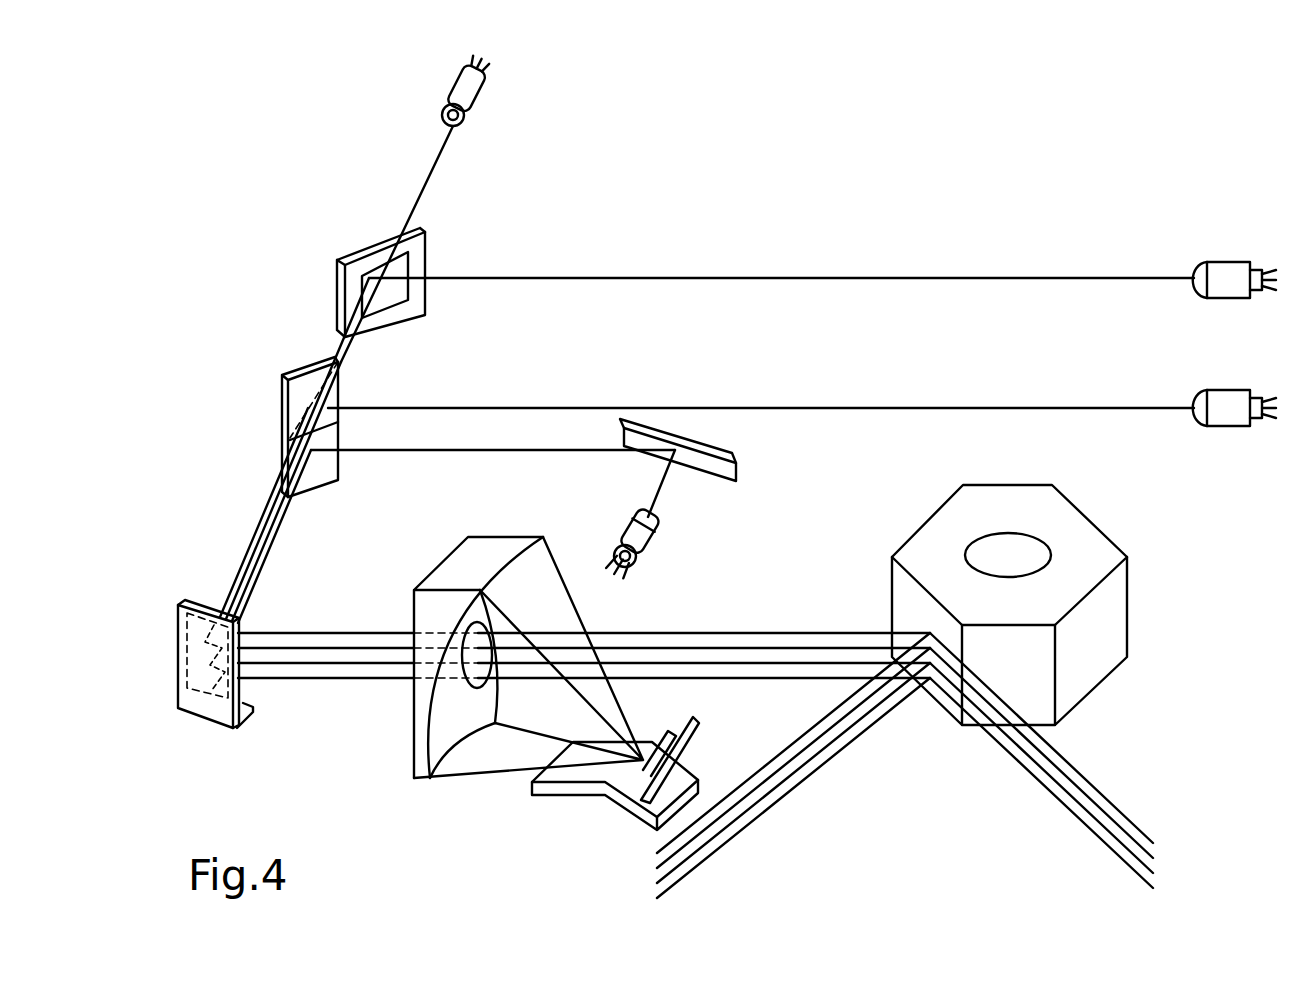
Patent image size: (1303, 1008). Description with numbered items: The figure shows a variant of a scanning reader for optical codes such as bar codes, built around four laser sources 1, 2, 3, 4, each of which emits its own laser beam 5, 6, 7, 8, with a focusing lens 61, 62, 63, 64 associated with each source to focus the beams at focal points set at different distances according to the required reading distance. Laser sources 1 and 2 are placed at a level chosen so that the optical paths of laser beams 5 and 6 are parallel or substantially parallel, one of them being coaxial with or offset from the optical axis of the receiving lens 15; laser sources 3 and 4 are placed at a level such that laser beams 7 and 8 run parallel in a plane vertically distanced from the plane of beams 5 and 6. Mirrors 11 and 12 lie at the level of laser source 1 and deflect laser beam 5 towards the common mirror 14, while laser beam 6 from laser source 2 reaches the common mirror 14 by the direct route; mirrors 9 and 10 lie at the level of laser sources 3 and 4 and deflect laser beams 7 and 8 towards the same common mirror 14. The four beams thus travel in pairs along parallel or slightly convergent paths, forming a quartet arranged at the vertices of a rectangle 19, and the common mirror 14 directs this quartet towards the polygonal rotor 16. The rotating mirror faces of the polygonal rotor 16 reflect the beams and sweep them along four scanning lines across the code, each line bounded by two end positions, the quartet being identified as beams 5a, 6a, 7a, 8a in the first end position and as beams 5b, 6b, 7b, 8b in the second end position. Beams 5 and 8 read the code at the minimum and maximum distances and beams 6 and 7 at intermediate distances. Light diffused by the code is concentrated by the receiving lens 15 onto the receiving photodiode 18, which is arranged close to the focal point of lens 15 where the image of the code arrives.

The laser source 1 is at (614, 562).
The laser source 2 is at (466, 75).
The laser source 3 is at (1257, 400).
The laser source 4 is at (1257, 268).
The laser beam 5 is at (231, 590).
The laser beam 6 is at (428, 172).
The laser beam 7 is at (240, 585).
The laser beam 8 is at (258, 575).
The mirror 9 is at (293, 392).
The mirror 10 is at (356, 278).
The mirror 11 is at (701, 478).
The mirror 12 is at (326, 446).
The common mirror 14 is at (205, 713).
The receiving lens 15 is at (424, 772).
The polygonal rotor 16 is at (968, 611).
The receiving photodiode 18 is at (656, 738).
The rectangle 19 is at (186, 644).
The focusing lens 61 is at (640, 528).
The focusing lens 62 is at (444, 112).
The focusing lens 63 is at (1197, 420).
The focusing lens 64 is at (1197, 292).
The laser beam in first end position 5a is at (818, 771).
The laser beam in first end position 6a is at (797, 790).
The laser beam in first end position 7a is at (783, 808).
The laser beam in first end position 8a is at (748, 822).
The laser beam in second end position 5b is at (1022, 764).
The laser beam in second end position 6b is at (1035, 780).
The laser beam in second end position 7b is at (1042, 795).
The laser beam in second end position 8b is at (1065, 808).